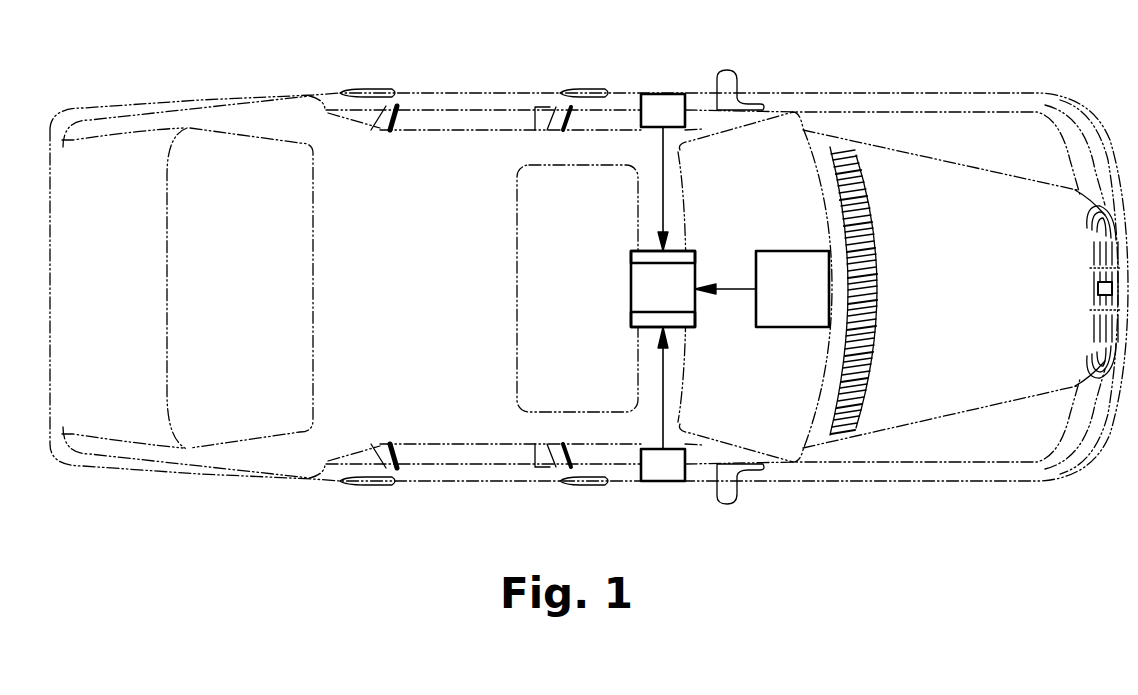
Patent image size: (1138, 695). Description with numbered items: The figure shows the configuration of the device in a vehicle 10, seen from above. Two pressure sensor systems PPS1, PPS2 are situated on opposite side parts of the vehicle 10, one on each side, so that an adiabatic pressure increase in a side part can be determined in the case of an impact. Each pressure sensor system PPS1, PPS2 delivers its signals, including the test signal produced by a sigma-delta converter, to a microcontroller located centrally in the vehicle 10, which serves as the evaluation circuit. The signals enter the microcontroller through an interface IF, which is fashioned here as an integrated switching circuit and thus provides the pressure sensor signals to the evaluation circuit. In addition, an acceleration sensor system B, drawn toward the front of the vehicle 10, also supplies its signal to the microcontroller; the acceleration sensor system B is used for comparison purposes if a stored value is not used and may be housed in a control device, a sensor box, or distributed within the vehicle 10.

The vehicle 10 is at (455, 100).
The pressure sensor system PPS1 is at (662, 110).
The pressure sensor system PPS2 is at (662, 468).
The acceleration sensor system B is at (794, 265).
The interface IF is at (642, 258).